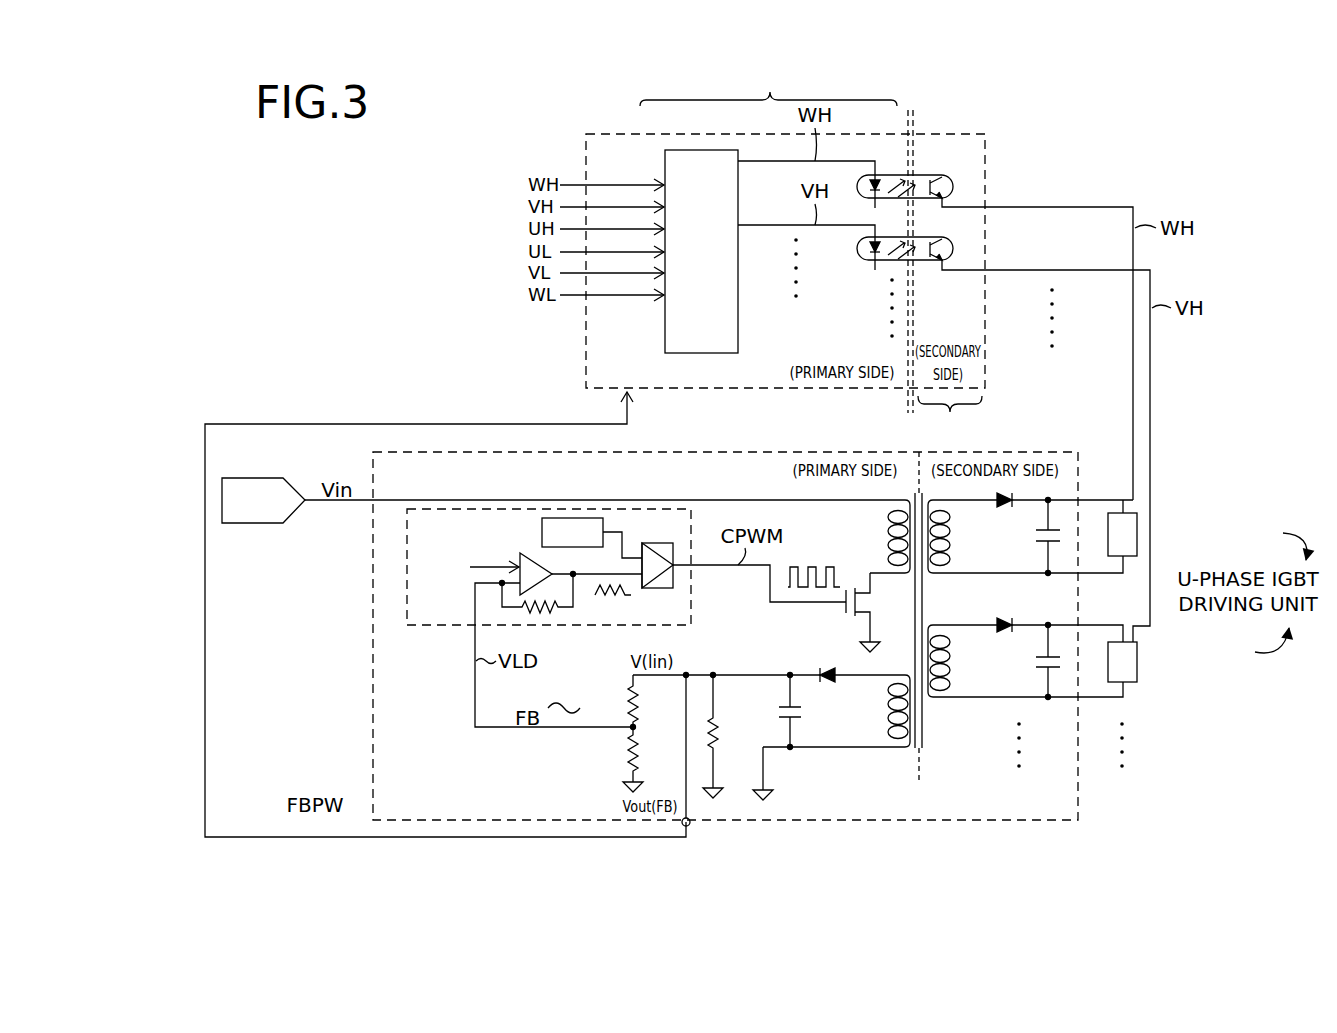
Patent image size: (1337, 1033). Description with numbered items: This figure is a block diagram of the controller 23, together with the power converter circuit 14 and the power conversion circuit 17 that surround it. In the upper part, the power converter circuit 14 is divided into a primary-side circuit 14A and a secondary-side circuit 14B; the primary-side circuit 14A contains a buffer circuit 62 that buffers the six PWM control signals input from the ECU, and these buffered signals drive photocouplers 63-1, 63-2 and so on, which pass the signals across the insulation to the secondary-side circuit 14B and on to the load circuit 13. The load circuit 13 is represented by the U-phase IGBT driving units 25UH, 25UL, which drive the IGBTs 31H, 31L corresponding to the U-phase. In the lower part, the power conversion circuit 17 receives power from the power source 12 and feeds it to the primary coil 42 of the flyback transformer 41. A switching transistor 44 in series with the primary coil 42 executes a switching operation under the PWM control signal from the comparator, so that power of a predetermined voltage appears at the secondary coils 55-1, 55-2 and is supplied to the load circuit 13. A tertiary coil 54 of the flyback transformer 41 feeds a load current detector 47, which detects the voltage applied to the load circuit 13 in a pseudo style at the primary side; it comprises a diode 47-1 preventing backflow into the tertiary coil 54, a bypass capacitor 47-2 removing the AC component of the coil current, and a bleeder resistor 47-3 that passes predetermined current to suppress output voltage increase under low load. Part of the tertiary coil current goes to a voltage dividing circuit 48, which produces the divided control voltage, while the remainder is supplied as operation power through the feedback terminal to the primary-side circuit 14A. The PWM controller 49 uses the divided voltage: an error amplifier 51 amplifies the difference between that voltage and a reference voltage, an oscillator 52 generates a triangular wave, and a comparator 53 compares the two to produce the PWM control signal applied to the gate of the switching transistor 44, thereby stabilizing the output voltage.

The power source 12 is at (262, 478).
The load circuit 13 is at (1110, 785).
The power converter circuit 14 is at (947, 134).
The primary-side circuit 14A is at (768, 86).
The secondary-side circuit 14B is at (950, 420).
The power conversion circuit 17 is at (373, 672).
The controller 23 is at (364, 201).
The flyback transformer 41 is at (929, 753).
The primary coil 42 is at (893, 514).
The switching transistor 44 is at (850, 590).
The load current detector 47 is at (832, 628).
The diode 47-1 is at (826, 668).
The bypass capacitor 47-2 is at (775, 710).
The bleeder resistor 47-3 is at (720, 728).
The voltage dividing circuit 48 is at (646, 736).
The PWM controller 49 is at (407, 594).
The error amplifier 51 is at (527, 553).
The oscillator 52 is at (585, 518).
The comparator 53 is at (656, 543).
The tertiary coil 54 is at (890, 702).
The secondary coil 55-1 is at (948, 542).
The secondary coil 55-2 is at (948, 665).
The buffer circuit 62 is at (708, 150).
The photocoupler 63-1 is at (955, 188).
The photocoupler 63-2 is at (955, 250).
The U-phase IGBT driving unit 25UH is at (1190, 534).
The IGBT 31H is at (1137, 532).
The U-phase IGBT driving unit 25UL is at (1181, 662).
The IGBT 31L is at (1137, 660).